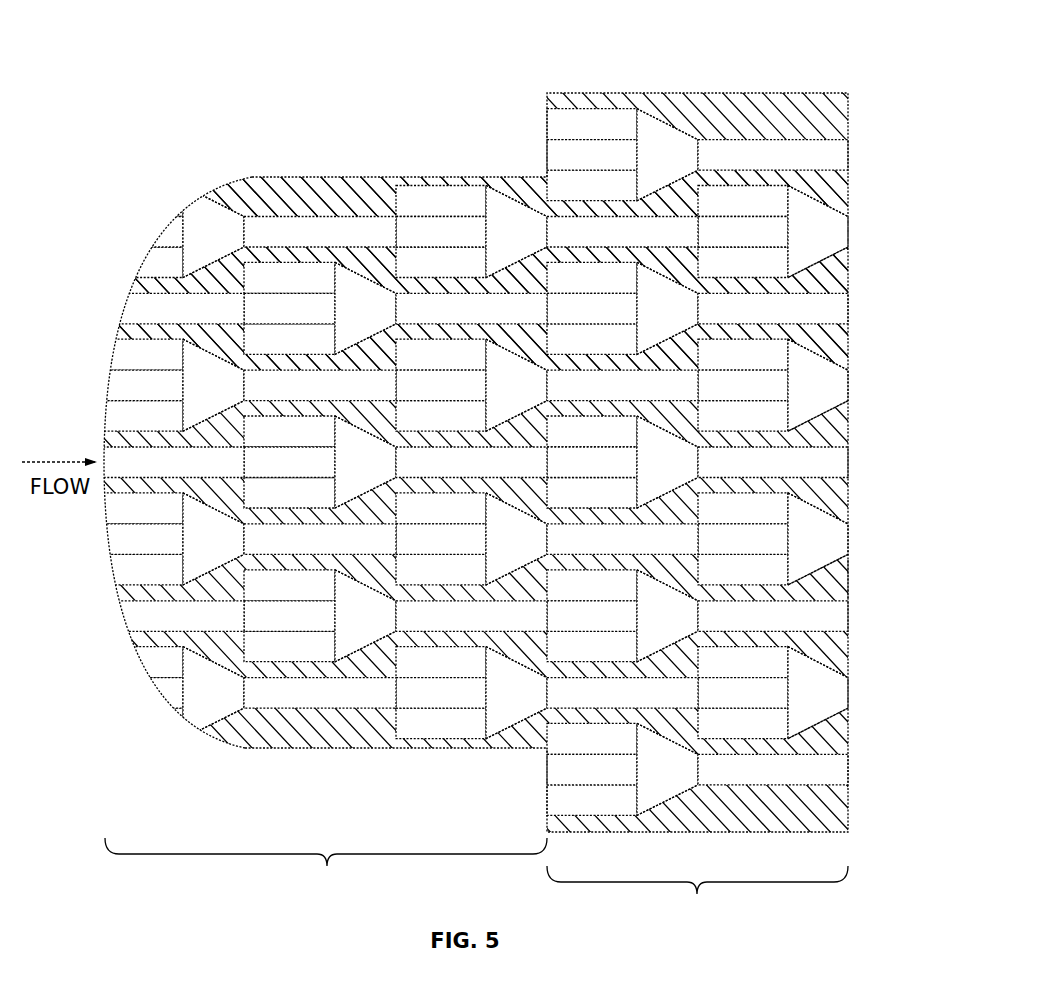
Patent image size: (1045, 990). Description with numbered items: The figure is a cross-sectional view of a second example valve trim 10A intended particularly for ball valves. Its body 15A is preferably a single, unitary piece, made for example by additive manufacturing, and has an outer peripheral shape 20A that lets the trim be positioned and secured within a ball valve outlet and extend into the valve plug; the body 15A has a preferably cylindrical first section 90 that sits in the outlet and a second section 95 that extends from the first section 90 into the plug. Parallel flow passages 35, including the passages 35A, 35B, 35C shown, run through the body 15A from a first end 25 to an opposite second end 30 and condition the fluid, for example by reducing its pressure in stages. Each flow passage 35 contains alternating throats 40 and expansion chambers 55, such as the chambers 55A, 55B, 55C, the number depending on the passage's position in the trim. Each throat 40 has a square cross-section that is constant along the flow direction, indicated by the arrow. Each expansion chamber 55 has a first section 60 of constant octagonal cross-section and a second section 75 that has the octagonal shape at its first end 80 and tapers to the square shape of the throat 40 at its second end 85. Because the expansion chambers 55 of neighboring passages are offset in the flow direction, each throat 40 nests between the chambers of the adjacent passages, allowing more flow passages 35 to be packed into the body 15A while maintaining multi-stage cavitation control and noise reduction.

The valve trim 10A is at (182, 92).
The body 15A is at (726, 817).
The outer peripheral shape 20A is at (305, 752).
The first end 25 is at (136, 284).
The second end 30 is at (851, 580).
The flow passages 35 is at (830, 157).
The flow passage 35A is at (823, 228).
The flow passage 35B is at (823, 305).
The flow passage 35C is at (823, 382).
The throat 40 is at (336, 245).
The expansion chamber 55 is at (197, 243).
The expansion chamber 55A is at (402, 243).
The expansion chamber 55B is at (553, 320).
The expansion chamber 55C is at (402, 397).
The first section 60 is at (454, 195).
The second section 75 is at (516, 337).
The first end 80 is at (473, 254).
The second end 85 is at (545, 222).
The first section 90 is at (697, 895).
The second section 95 is at (326, 867).